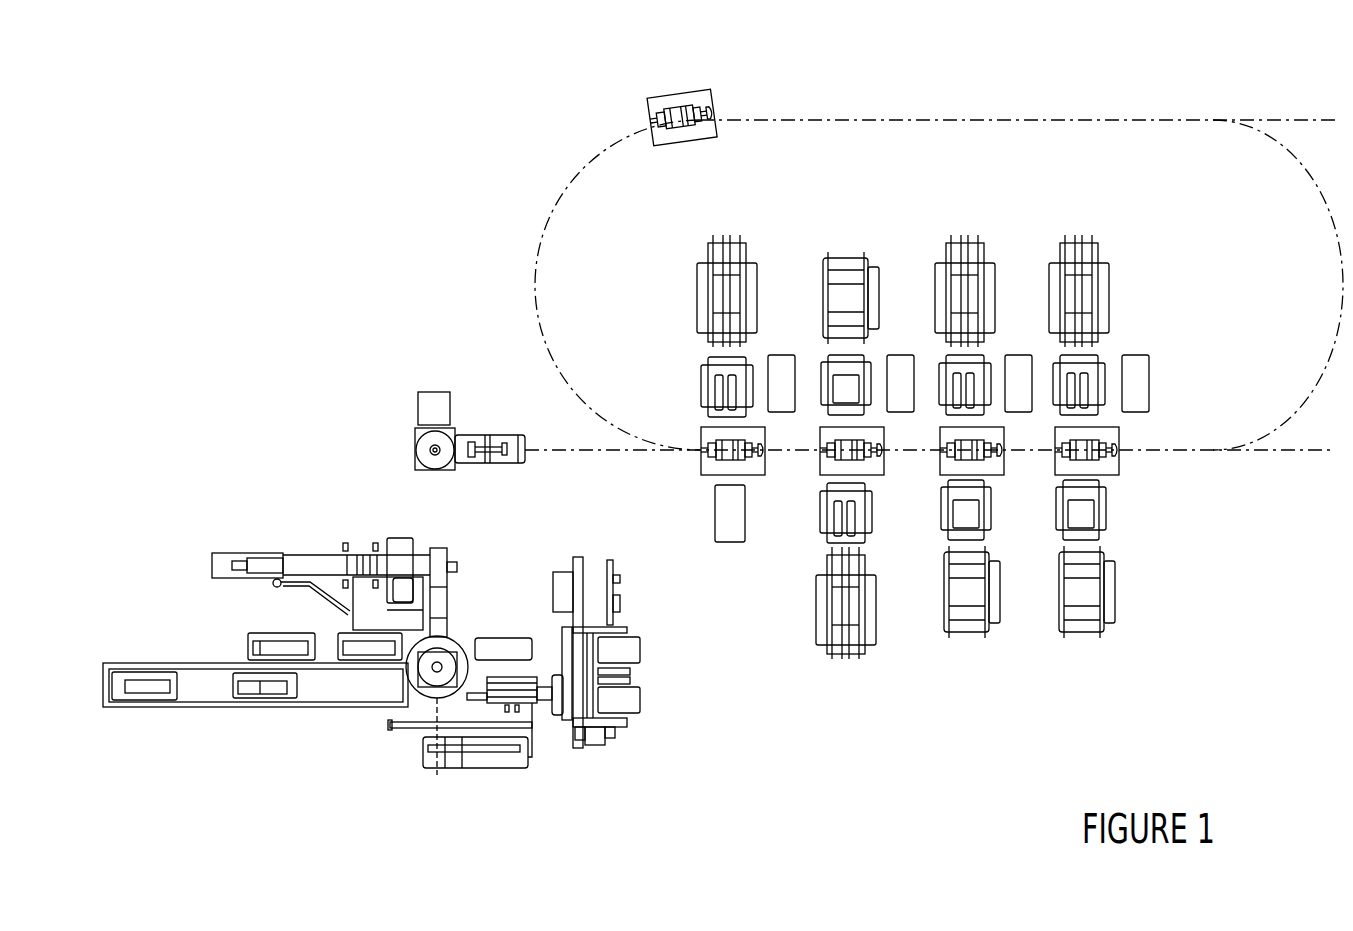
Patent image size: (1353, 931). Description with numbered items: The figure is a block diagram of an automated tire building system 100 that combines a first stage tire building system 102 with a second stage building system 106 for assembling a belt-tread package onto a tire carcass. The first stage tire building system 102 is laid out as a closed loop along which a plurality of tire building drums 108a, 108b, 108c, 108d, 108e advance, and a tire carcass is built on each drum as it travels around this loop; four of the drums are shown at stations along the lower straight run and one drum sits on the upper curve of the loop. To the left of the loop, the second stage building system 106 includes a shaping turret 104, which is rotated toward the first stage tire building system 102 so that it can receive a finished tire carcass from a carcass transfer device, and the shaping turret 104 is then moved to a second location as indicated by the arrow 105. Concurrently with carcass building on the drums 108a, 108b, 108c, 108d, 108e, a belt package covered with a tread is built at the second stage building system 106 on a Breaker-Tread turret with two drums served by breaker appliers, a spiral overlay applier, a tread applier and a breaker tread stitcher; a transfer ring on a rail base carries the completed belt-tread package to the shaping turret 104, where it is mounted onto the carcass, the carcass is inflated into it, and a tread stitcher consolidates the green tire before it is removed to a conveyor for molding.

The automated tire building system 100 is at (934, 256).
The first stage tire building system 102 is at (1168, 103).
The shaping turret 104 is at (390, 389).
The arrow 105 is at (518, 406).
The second stage building system 106 is at (180, 496).
The tire building drum 108a is at (1087, 460).
The tire building drum 108b is at (978, 456).
The tire building drum 108c is at (845, 448).
The tire building drum 108d is at (713, 462).
The tire building drum 108e is at (688, 105).